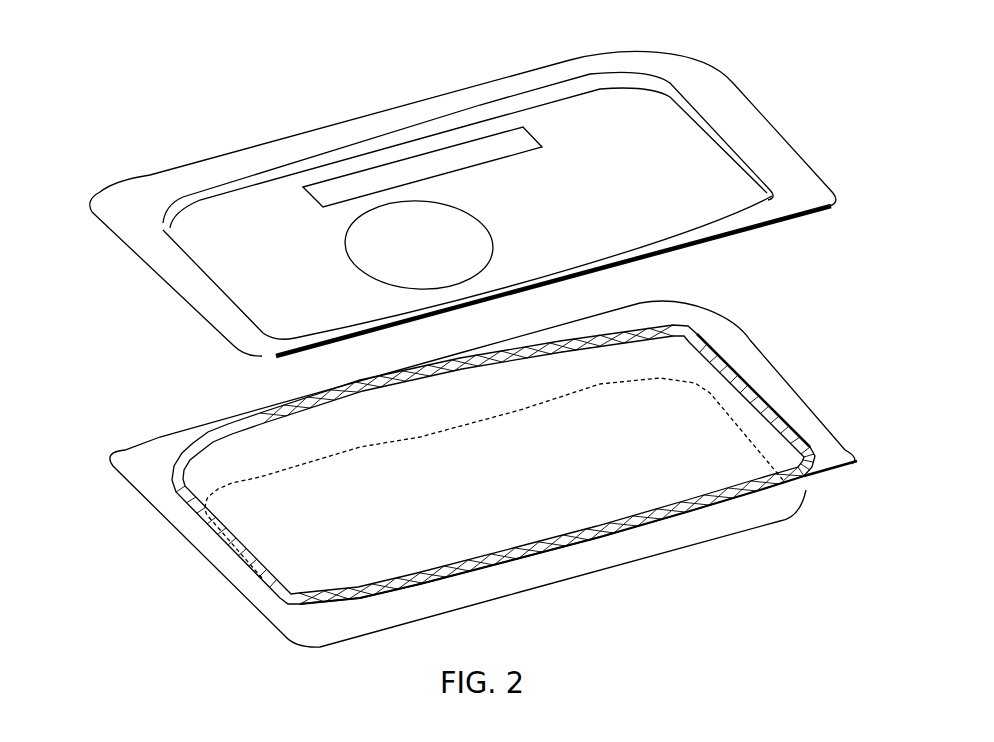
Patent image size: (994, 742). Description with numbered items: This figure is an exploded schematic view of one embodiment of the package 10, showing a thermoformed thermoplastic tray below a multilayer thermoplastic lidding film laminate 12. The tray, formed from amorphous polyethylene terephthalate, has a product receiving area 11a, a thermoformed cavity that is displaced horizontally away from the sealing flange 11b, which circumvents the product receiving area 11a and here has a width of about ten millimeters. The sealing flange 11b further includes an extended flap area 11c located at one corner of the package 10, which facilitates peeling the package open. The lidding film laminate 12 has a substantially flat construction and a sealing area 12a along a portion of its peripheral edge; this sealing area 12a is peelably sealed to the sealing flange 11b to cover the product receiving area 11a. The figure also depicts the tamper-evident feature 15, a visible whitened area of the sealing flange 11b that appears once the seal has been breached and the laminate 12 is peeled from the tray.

The package 10 is at (324, 100).
The multilayer thermoplastic lidding film laminate 12 is at (481, 204).
The sealing area 12a is at (801, 217).
The product receiving area 11a is at (693, 468).
The sealing flange 11b is at (835, 452).
The extended flap area 11c is at (140, 452).
The tamper-evident feature 15 is at (258, 578).